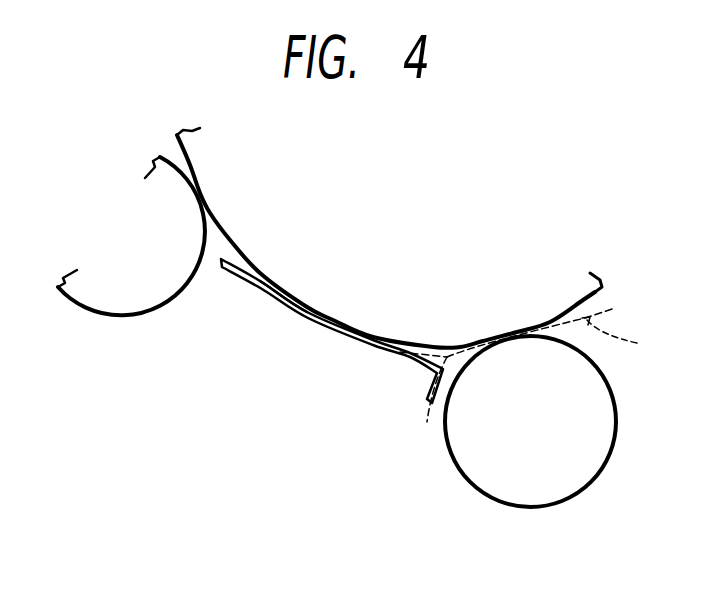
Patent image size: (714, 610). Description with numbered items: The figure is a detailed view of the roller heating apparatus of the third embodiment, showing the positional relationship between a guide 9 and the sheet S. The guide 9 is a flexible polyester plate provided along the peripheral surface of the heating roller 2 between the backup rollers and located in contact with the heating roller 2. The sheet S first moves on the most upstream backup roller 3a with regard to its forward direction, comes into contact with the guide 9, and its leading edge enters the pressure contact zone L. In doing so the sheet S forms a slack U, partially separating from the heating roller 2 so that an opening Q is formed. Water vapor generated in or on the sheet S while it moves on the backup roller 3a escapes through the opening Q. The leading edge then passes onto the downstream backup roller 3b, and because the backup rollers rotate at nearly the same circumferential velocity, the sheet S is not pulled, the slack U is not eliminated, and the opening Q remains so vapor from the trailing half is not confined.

The heating roller 2 is at (389, 238).
The guide 9 is at (332, 331).
The most upstream backup roller 3a is at (530, 456).
The downstream backup roller 3b is at (131, 274).
The pressure contact zone L is at (296, 276).
The opening Q is at (425, 323).
The sheet S is at (549, 338).
The slack U is at (434, 412).